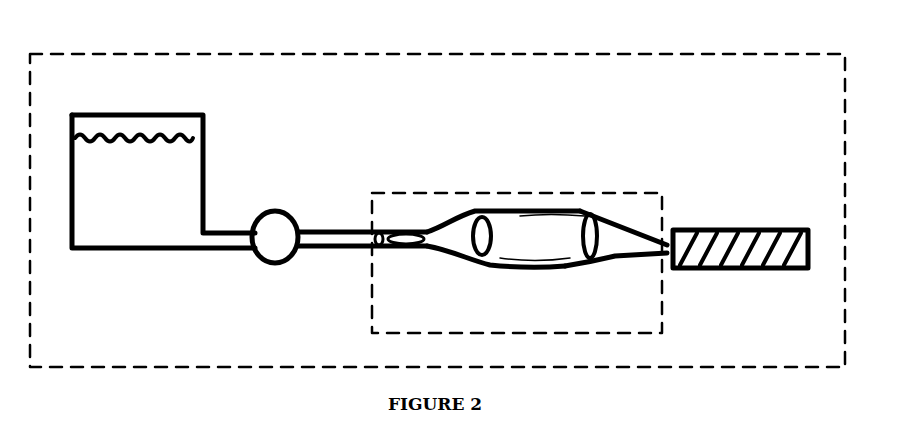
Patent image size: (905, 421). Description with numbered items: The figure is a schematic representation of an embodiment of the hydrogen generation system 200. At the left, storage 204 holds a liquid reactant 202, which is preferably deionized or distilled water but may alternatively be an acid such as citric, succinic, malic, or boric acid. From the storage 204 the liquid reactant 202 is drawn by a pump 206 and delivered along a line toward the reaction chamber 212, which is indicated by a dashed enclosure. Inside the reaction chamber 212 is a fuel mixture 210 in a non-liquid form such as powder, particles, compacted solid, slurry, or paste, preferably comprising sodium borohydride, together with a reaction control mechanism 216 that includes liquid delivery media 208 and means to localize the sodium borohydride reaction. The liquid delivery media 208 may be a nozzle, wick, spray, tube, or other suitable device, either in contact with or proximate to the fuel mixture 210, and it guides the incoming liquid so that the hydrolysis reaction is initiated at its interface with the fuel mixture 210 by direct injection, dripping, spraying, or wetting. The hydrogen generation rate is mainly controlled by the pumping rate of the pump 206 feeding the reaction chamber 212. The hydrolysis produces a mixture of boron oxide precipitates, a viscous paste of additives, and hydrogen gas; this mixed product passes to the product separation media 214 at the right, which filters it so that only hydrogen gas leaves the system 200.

The hydrogen generation system 200 is at (437, 198).
The liquid reactant 202 is at (187, 127).
The storage for liquid reactant 204 is at (173, 175).
The pump 206 is at (263, 262).
The liquid delivery media 208 is at (413, 255).
The fuel mixture 210 is at (537, 270).
The reaction chamber 212 is at (517, 253).
The product separation media 214 is at (737, 272).
The reaction control mechanism 216 is at (620, 260).